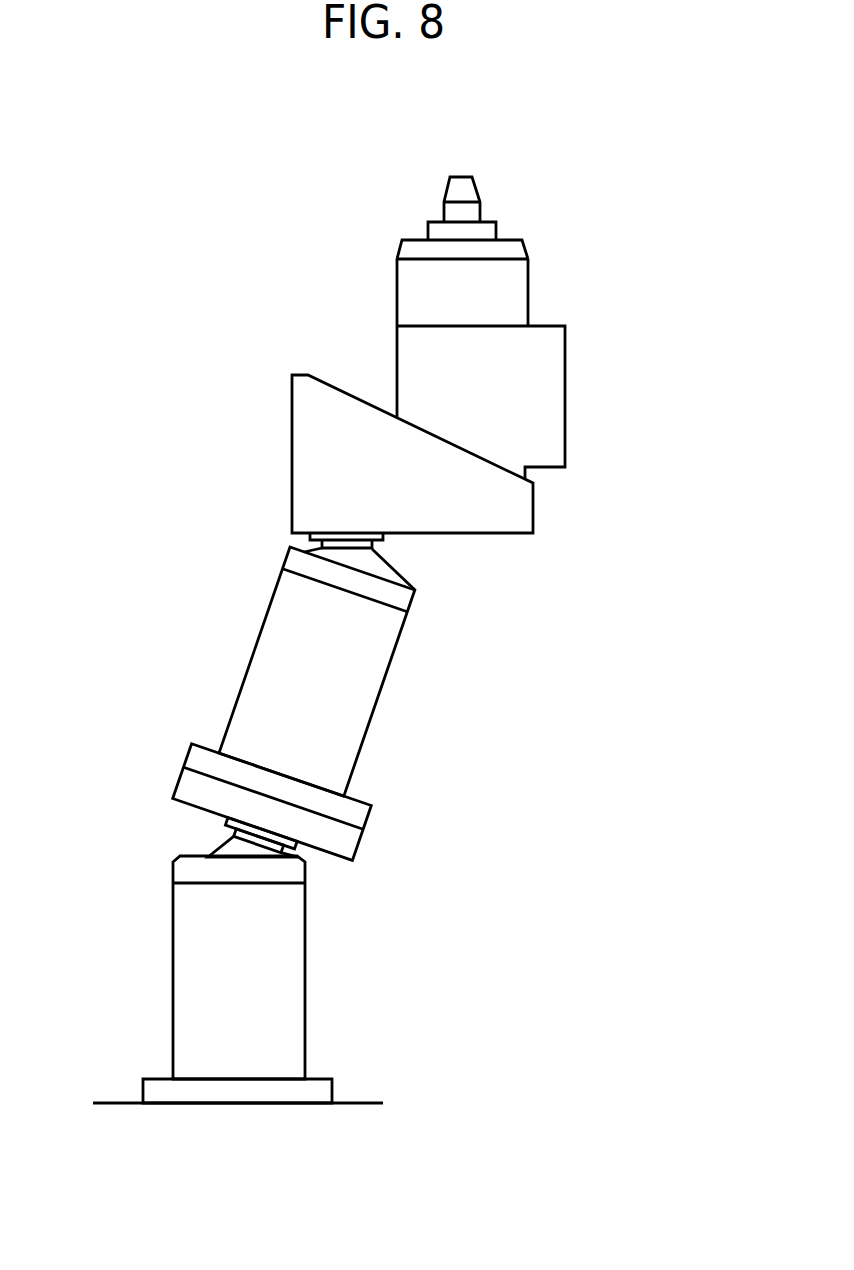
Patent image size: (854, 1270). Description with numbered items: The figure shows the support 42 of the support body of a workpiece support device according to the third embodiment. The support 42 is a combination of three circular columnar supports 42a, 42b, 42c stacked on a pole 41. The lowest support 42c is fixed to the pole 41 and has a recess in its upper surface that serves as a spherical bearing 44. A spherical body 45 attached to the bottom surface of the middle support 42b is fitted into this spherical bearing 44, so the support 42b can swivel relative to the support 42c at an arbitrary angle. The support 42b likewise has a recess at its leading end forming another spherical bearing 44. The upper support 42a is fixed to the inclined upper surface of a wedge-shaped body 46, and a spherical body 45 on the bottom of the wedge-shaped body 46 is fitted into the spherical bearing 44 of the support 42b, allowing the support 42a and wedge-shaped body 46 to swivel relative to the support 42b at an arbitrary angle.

The pole 41 is at (350, 1122).
The support 42 is at (662, 225).
The support 42a is at (553, 402).
The support 42b is at (263, 678).
The support 42c is at (198, 973).
The spherical bearing 44 is at (398, 573).
The spherical body 45 is at (373, 556).
The wedge-shaped body 46 is at (533, 505).